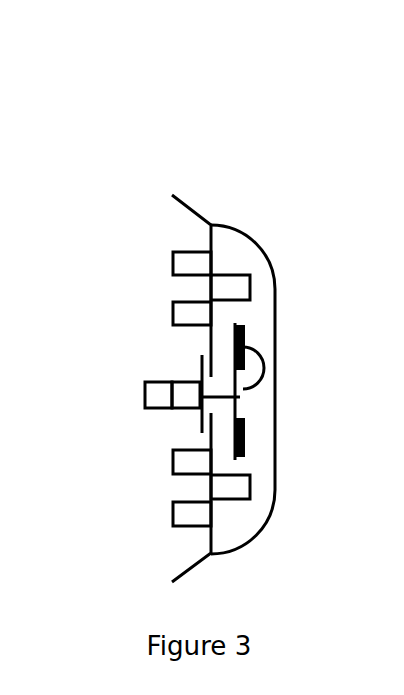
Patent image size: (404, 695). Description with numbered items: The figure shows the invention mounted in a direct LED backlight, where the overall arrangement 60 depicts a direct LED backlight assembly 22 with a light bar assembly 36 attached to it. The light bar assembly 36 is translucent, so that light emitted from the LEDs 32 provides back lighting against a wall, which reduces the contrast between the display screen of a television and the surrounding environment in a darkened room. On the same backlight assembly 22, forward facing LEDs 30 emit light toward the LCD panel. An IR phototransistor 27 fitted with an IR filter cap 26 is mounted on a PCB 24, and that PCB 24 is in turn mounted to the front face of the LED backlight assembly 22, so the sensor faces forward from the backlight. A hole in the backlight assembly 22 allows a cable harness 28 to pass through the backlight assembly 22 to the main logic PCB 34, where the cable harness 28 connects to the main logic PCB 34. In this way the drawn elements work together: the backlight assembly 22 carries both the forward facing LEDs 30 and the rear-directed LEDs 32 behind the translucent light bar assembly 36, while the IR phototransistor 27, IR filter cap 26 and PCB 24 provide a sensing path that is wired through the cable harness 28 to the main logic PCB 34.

The direct LED backlight assembly with light bar assembly attached 60 is at (212, 113).
The direct LED backlight assembly 22 is at (204, 215).
The PCB 24 is at (198, 422).
The IR filter cap 26 is at (142, 393).
The IR phototransistor 27 is at (183, 379).
The cable harness 28 is at (271, 362).
The forward facing LEDs 30 is at (170, 312).
The LEDs 32 is at (236, 274).
The main logic PCB 34 is at (243, 403).
The light bar assembly 36 is at (282, 482).